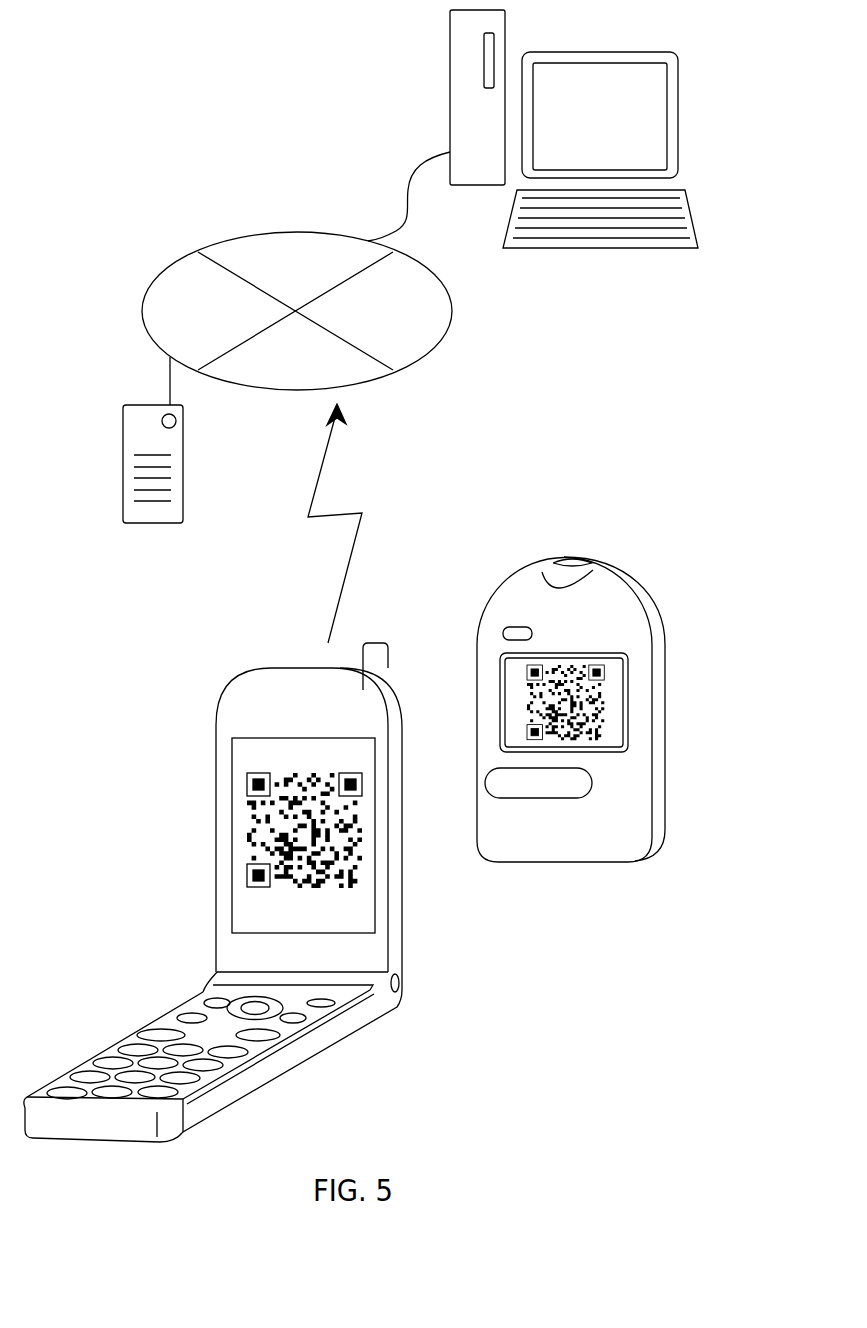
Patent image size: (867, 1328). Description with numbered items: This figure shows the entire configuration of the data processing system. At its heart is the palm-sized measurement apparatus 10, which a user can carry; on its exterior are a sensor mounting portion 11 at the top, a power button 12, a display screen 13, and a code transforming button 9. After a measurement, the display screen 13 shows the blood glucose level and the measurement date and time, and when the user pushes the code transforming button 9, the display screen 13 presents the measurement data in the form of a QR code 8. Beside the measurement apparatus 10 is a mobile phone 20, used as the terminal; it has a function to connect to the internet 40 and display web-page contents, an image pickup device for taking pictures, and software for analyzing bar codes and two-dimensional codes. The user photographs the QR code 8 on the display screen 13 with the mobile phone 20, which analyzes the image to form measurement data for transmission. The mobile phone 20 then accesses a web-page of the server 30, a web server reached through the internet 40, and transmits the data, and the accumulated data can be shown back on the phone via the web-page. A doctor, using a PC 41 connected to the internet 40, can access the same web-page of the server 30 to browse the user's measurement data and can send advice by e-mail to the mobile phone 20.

The QR code 8 is at (606, 702).
The code transforming button 9 is at (485, 783).
The measurement apparatus 10 is at (665, 718).
The sensor mounting portion 11 is at (572, 560).
The power button 12 is at (503, 633).
The display screen 13 is at (618, 735).
The mobile phone 20 is at (403, 925).
The server 30 is at (123, 463).
The internet 40 is at (452, 308).
The PC 41 is at (678, 115).